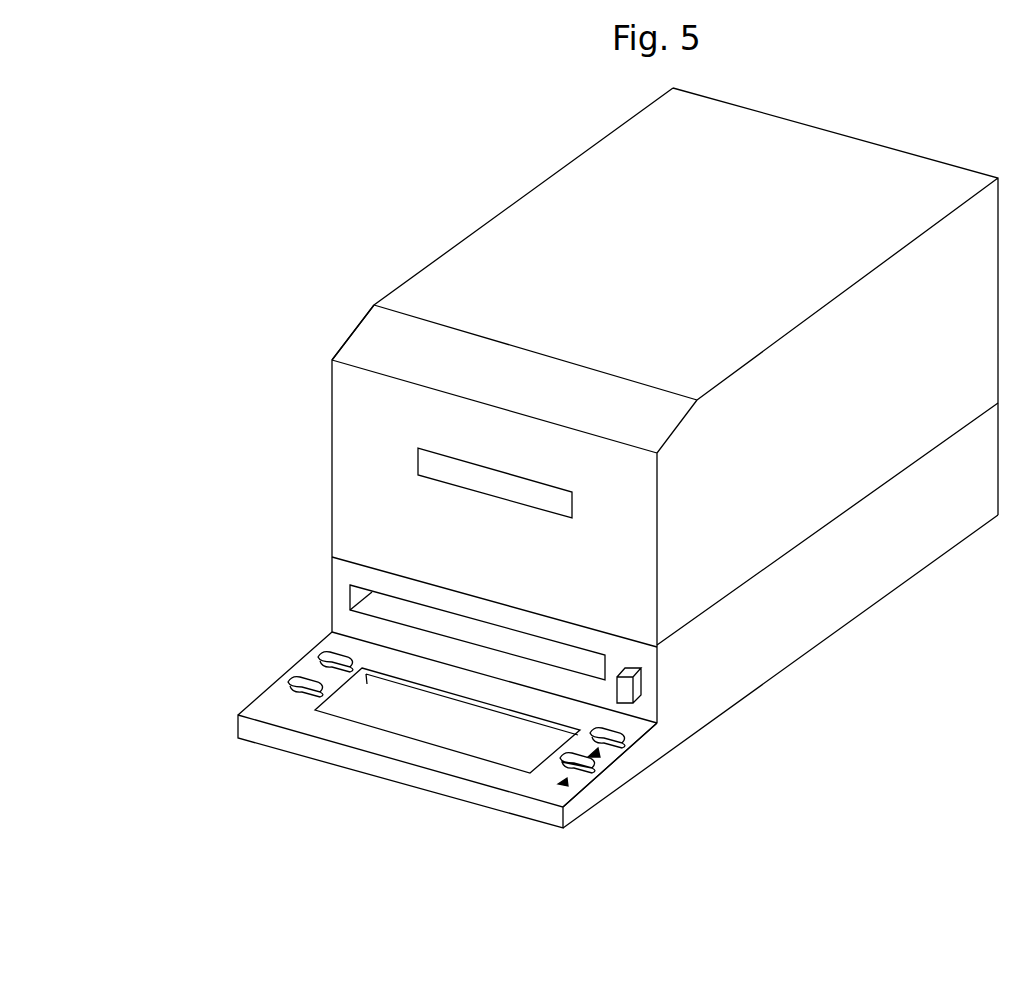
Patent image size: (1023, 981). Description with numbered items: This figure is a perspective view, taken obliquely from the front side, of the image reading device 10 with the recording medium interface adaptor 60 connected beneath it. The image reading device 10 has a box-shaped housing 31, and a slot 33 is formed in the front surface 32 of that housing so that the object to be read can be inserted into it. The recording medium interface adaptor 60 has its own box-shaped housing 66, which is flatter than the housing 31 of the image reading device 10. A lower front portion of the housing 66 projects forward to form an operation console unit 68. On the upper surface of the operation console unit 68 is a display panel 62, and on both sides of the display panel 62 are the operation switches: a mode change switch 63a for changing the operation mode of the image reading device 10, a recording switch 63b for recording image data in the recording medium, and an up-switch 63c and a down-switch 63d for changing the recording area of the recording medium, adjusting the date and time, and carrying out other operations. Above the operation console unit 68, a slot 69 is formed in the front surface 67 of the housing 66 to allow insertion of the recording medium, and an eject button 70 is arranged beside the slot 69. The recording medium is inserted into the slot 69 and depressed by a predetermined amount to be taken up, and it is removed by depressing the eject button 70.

The image reading device 10 is at (548, 160).
The housing 31 is at (468, 232).
The front surface 32 is at (348, 473).
The slot 33 is at (437, 467).
The recording medium interface adaptor 60 is at (878, 628).
The display panel 62 is at (438, 722).
The mode change switch 63a is at (320, 655).
The recording switch 63b is at (300, 682).
The up-switch 63c is at (621, 731).
The down-switch 63d is at (596, 754).
The housing 66 is at (770, 683).
The front surface 67 is at (336, 604).
The operation console unit 68 is at (275, 740).
The slot 69 is at (378, 602).
The eject button 70 is at (638, 698).